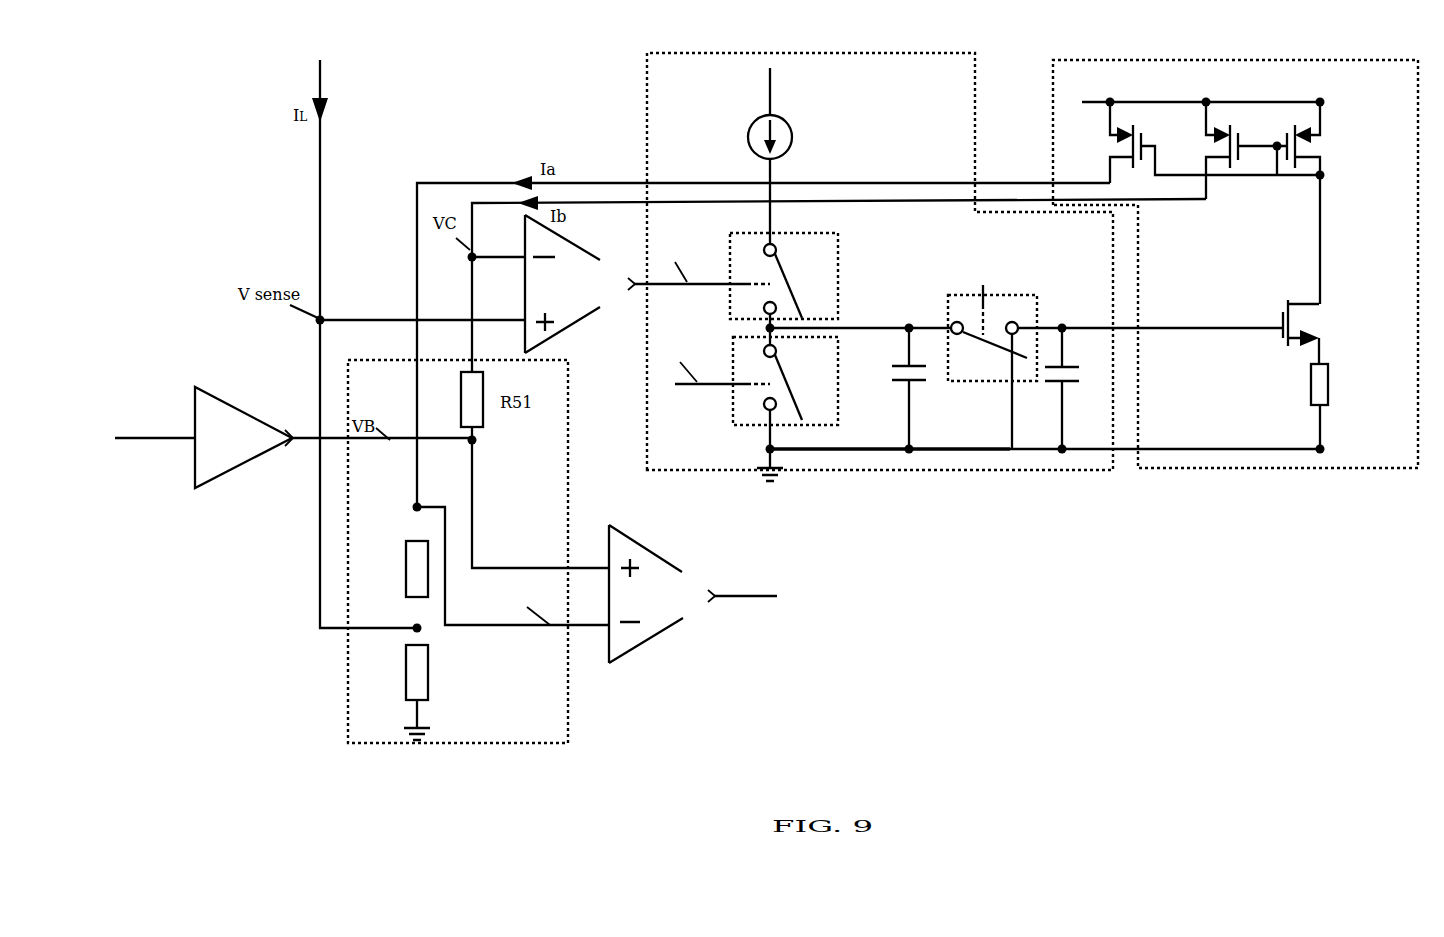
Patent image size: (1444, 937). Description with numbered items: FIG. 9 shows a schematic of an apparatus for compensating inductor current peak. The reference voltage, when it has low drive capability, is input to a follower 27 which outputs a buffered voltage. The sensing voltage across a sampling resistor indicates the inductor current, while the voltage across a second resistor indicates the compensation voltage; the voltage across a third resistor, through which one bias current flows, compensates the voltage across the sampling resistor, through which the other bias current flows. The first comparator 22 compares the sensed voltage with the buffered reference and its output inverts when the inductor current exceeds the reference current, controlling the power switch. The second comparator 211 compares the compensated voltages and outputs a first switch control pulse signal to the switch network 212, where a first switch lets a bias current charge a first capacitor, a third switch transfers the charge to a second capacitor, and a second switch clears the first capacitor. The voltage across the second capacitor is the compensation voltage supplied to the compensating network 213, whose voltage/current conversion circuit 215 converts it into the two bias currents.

The follower 27 is at (252, 416).
The second comparator 211 is at (580, 306).
The first comparator 22 is at (677, 618).
The switch network 212 is at (983, 267).
The compensating network 213 is at (478, 551).
The voltage/current conversion circuit 215 is at (1235, 264).